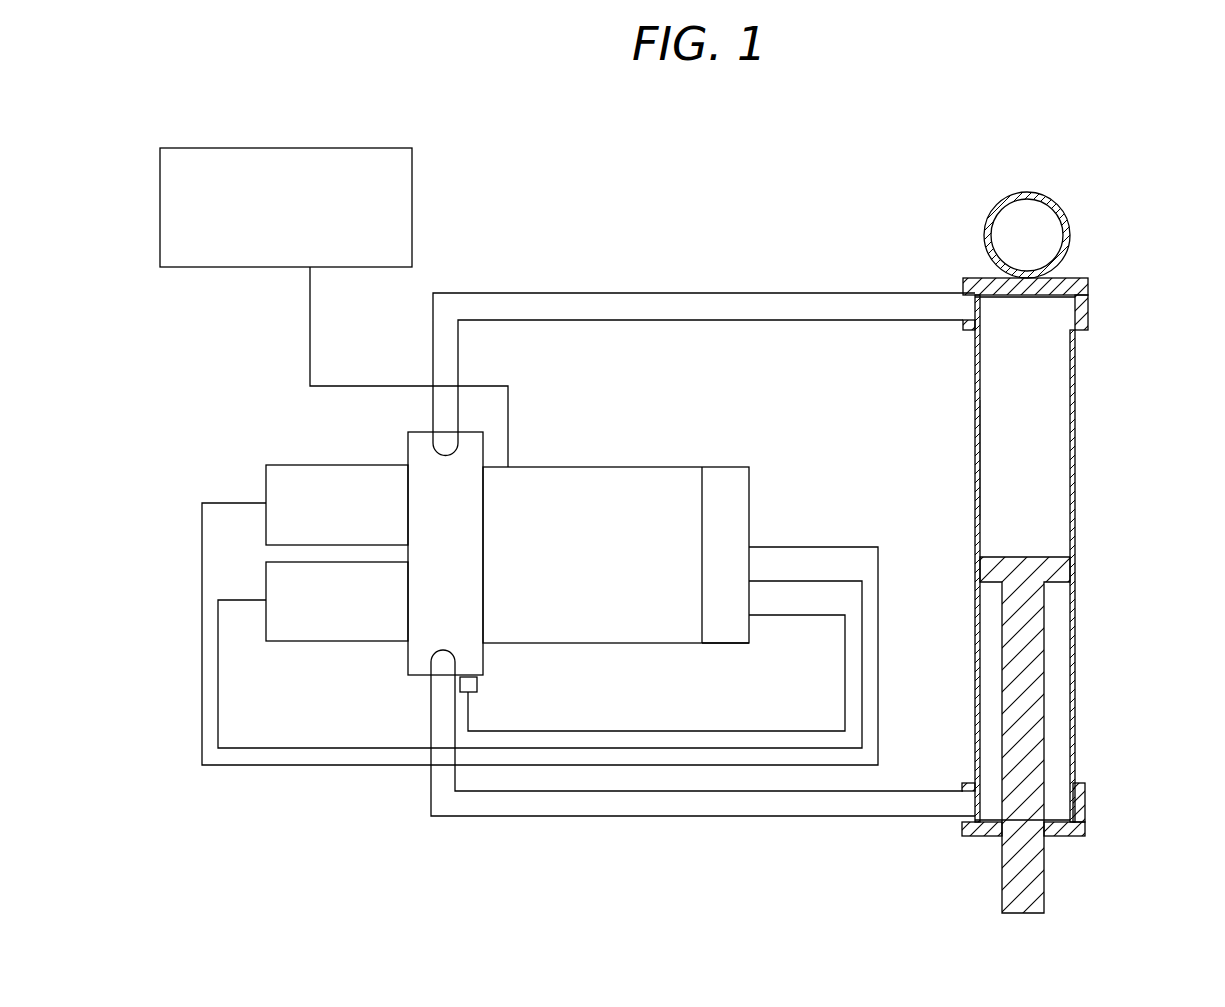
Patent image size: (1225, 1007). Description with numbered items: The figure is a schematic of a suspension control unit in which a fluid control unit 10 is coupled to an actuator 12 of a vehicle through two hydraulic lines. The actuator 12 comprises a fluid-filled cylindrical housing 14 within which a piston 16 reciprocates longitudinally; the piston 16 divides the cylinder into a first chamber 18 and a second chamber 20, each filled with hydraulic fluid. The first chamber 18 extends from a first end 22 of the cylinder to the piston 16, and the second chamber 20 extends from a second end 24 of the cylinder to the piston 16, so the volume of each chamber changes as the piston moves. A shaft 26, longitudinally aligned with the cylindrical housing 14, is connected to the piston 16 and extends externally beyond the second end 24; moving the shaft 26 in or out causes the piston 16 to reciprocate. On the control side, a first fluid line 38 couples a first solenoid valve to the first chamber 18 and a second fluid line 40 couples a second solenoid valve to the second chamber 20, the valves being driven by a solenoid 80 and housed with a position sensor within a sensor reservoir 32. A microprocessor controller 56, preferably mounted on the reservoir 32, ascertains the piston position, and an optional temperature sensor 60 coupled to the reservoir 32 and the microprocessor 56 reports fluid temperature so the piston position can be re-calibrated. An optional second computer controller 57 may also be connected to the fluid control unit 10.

The fluid control unit 10 is at (320, 776).
The actuator 12 is at (1095, 558).
The cylindrical housing 14 is at (1076, 450).
The piston 16 is at (1068, 731).
The first chamber 18 is at (1055, 397).
The second chamber 20 is at (1068, 735).
The first end 22 is at (1072, 280).
The second end 24 is at (1055, 818).
The shaft 26 is at (1025, 876).
The reservoir 32 is at (724, 650).
The first fluid line 38 is at (745, 293).
The second fluid line 40 is at (505, 816).
The microprocessor controller 56 is at (728, 518).
The second computer controller 57 is at (400, 148).
The temperature sensor 60 is at (478, 689).
The solenoid 80 is at (266, 482).